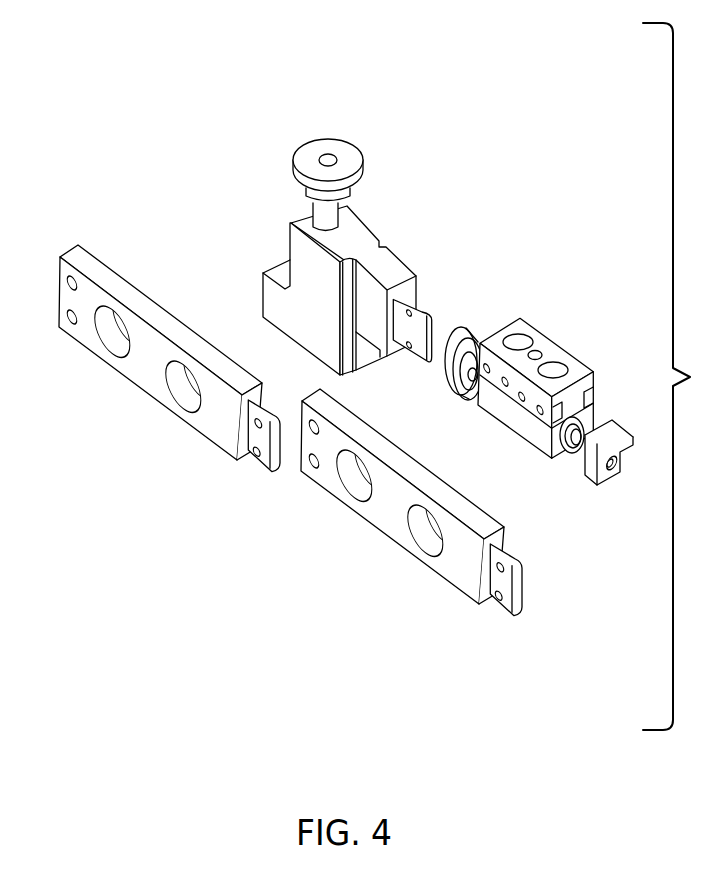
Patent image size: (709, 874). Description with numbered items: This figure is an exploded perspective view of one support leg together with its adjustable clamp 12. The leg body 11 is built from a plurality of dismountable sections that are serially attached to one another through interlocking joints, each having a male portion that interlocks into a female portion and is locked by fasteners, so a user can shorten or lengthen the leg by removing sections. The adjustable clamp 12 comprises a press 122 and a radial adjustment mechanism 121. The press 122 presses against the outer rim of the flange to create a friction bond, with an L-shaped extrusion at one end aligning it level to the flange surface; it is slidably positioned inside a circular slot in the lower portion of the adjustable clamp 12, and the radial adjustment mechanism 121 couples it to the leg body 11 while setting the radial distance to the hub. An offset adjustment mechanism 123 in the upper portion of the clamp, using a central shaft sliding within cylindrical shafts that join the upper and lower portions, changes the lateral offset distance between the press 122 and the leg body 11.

The leg body 11 is at (290, 430).
The adjustable clamp 12 is at (448, 288).
The radial adjustment mechanism 121 is at (512, 422).
The press 122 is at (574, 451).
The offset adjustment mechanism 123 is at (328, 143).